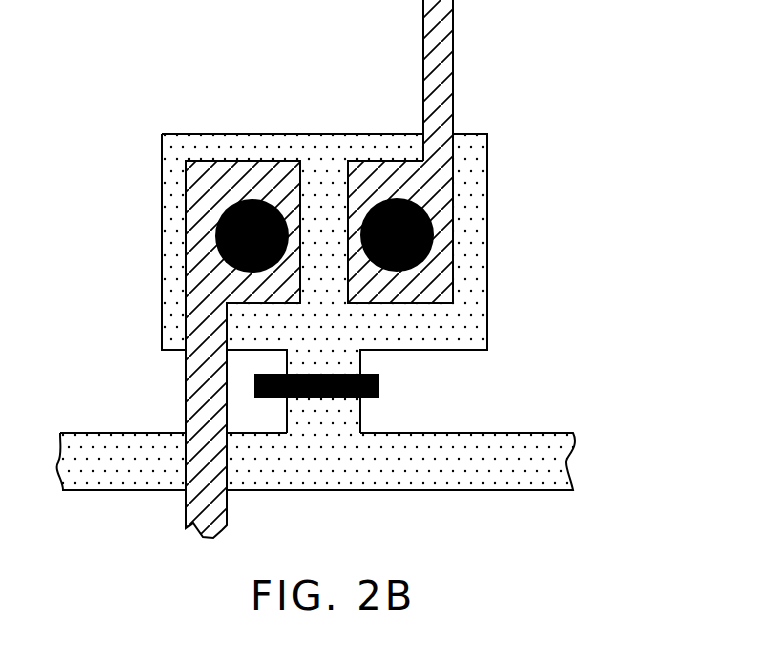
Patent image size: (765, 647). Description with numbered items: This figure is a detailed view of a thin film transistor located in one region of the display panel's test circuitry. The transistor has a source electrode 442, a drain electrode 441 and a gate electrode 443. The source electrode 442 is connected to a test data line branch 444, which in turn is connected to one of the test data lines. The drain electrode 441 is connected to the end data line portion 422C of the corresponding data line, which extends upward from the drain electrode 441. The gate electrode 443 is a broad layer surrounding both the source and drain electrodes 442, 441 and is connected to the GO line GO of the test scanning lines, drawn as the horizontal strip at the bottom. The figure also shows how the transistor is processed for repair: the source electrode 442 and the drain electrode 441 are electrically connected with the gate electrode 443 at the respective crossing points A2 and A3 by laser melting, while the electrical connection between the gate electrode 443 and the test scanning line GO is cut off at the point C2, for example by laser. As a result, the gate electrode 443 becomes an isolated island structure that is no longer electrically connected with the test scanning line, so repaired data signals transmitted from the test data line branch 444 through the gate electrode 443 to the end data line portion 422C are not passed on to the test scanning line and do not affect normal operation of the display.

The end data line portion 422C is at (453, 57).
The drain electrode 441 is at (435, 183).
The source electrode 442 is at (218, 277).
The gate electrode 443 is at (443, 334).
The test data line branch 444 is at (215, 400).
The crossing point A2 is at (232, 208).
The crossing point A3 is at (397, 198).
The cut-off point C2 is at (379, 381).
The GO line GO is at (505, 461).